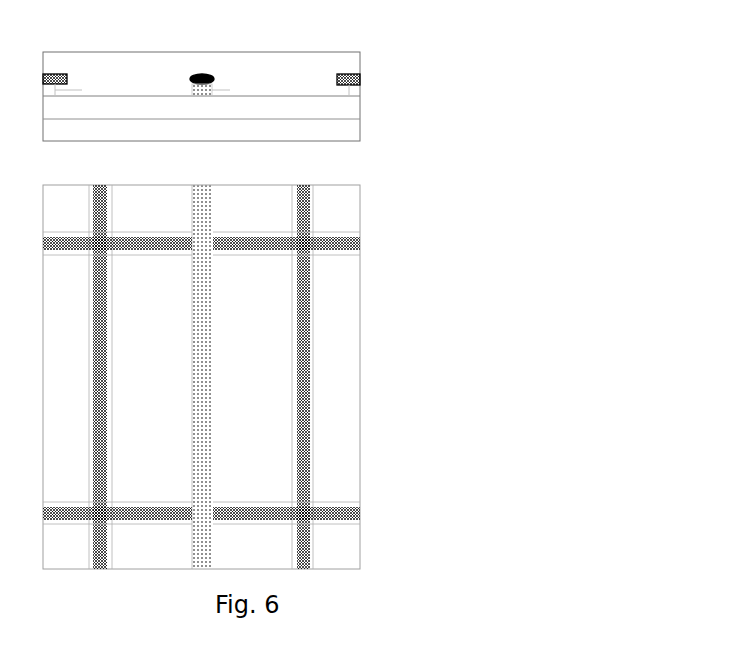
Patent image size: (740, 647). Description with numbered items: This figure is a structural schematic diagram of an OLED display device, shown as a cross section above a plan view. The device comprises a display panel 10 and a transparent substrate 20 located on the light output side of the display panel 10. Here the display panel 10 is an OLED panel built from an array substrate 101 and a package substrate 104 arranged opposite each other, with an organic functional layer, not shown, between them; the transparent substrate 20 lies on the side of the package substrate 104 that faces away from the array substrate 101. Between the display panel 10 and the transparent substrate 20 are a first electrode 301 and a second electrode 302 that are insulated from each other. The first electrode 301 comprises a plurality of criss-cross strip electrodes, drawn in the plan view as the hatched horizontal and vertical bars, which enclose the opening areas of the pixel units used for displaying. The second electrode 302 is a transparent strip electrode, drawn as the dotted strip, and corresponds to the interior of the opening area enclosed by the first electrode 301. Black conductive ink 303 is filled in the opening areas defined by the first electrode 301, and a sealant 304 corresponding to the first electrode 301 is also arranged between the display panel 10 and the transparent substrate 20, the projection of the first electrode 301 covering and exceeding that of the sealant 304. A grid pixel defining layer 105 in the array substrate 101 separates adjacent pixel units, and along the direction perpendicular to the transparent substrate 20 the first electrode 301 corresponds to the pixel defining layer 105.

The display panel 10 is at (418, 100).
The transparent substrate 20 is at (360, 62).
The array substrate 101 is at (360, 128).
The package substrate 104 is at (360, 108).
The pixel defining layer 105 is at (243, 377).
The first electrode 301 is at (55, 77).
The second electrode 302 is at (230, 90).
The black conductive ink 303 is at (203, 73).
The sealant 304 is at (82, 90).